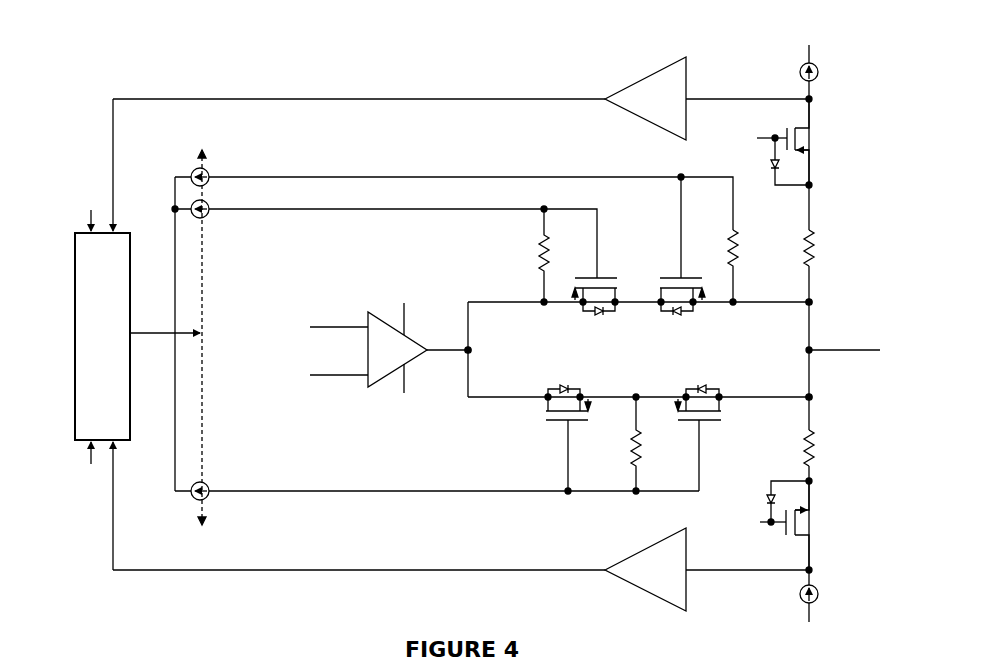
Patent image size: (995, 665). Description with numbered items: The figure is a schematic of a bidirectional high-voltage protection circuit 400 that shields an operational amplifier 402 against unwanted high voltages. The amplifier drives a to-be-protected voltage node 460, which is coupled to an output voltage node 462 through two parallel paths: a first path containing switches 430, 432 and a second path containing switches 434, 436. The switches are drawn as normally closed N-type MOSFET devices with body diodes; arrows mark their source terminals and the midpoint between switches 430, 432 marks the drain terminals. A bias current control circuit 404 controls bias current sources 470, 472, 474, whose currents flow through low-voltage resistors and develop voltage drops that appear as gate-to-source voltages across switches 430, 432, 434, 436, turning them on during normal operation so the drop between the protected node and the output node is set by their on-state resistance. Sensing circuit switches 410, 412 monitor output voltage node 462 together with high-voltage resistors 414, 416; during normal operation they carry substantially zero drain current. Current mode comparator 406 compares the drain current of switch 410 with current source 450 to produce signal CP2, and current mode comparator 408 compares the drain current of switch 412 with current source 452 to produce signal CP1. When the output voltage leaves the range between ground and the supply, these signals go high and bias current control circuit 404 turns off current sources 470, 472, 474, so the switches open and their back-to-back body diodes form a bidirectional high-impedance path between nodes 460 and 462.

The circuit 400 is at (515, 296).
The operational amplifier 402 is at (370, 305).
The bias current control circuit 404 is at (75, 325).
The current mode comparator 406 is at (661, 66).
The current mode comparator 408 is at (638, 592).
The sensing circuit switch 410 is at (822, 132).
The sensing circuit switch 412 is at (820, 508).
The high-voltage resistor 414 is at (823, 232).
The high-voltage resistor 416 is at (823, 432).
The switch 430 is at (600, 273).
The switch 432 is at (668, 273).
The switch 434 is at (557, 428).
The switch 436 is at (709, 428).
The current source 450 is at (823, 62).
The current source 452 is at (820, 582).
The to-be-protected voltage node 460 is at (464, 342).
The output voltage node 462 is at (825, 302).
The current source 470 is at (212, 165).
The current source 472 is at (212, 225).
The current source 474 is at (210, 478).